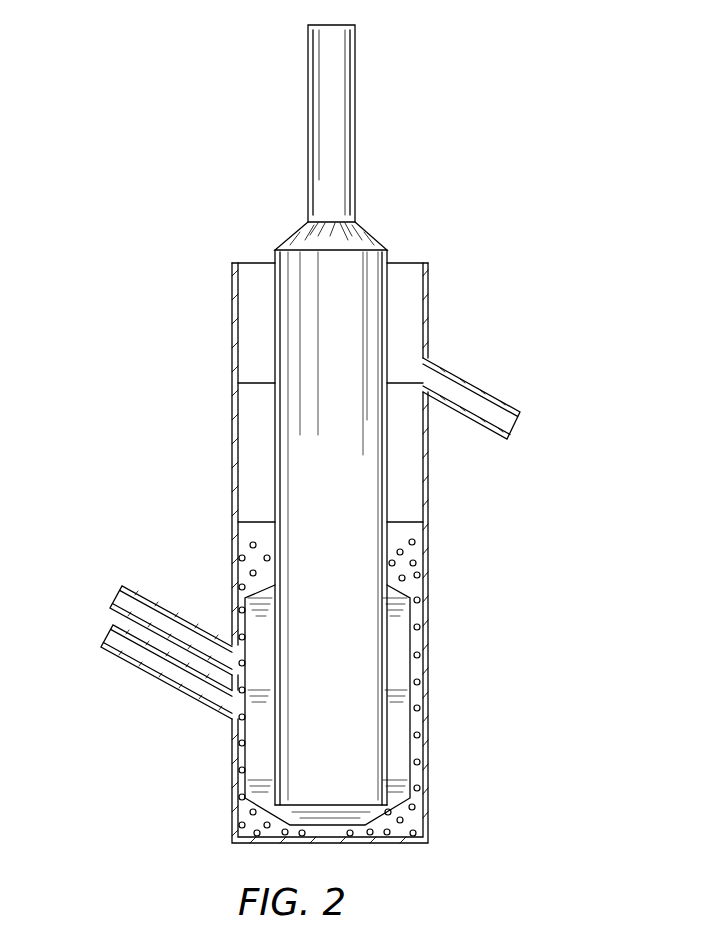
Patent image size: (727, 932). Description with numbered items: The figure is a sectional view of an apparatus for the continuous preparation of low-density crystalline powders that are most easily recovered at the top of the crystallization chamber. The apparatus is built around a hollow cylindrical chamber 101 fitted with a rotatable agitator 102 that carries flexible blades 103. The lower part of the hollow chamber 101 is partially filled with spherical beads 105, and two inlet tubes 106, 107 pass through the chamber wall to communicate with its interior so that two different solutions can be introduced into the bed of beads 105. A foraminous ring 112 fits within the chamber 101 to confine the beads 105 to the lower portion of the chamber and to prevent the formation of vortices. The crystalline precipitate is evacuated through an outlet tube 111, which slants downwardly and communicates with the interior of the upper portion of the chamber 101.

The hollow cylindrical chamber 101 is at (430, 284).
The rotatable agitator 102 is at (355, 103).
The flexible blades 103 is at (398, 648).
The spherical beads 105 is at (248, 548).
The inlet tube 106 is at (120, 597).
The inlet tube 107 is at (110, 638).
The outlet tube 111 is at (515, 424).
The foraminous ring 112 is at (405, 522).